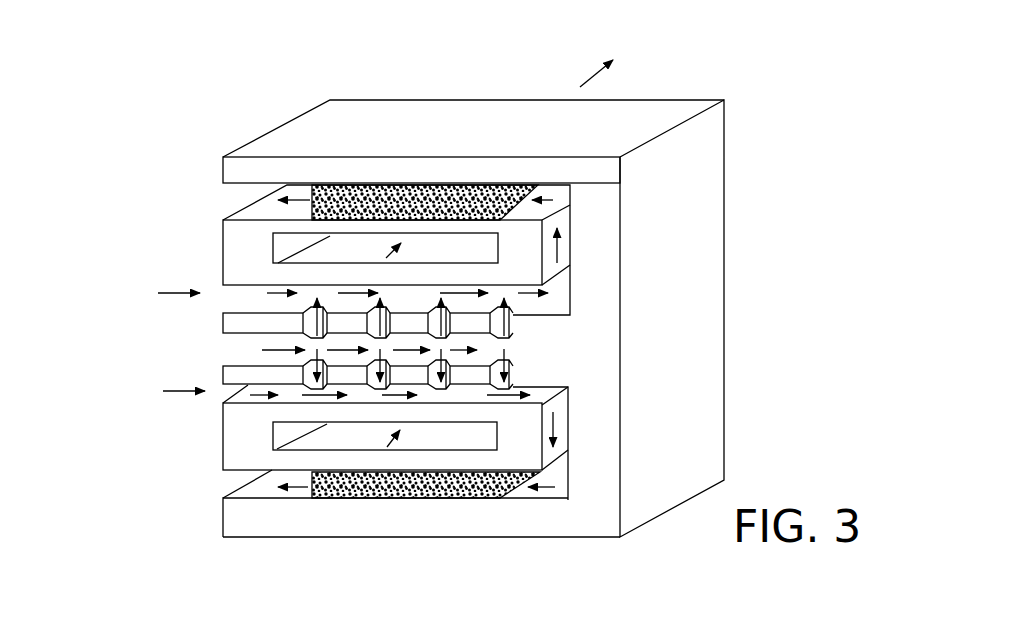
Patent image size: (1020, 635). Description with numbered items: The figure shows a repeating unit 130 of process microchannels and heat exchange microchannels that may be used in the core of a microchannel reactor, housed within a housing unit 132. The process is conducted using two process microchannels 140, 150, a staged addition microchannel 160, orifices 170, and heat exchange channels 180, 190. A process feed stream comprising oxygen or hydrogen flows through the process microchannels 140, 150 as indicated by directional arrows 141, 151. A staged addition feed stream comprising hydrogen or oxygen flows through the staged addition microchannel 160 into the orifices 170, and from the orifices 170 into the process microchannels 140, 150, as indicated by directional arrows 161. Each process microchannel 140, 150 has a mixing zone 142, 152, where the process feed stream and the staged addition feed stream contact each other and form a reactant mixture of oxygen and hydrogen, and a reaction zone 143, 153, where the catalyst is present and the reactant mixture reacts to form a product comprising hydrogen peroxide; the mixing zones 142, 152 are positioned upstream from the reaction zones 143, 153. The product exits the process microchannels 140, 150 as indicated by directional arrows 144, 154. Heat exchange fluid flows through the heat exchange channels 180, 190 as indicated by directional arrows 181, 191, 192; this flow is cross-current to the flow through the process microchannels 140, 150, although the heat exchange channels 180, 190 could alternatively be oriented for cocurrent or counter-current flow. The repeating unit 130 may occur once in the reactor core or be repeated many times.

The repeating unit 130 is at (305, 97).
The housing unit 132 is at (705, 172).
The process microchannel 140 is at (288, 400).
The directional arrow 141 is at (180, 391).
The mixing zone 142 is at (473, 397).
The reaction zone 143 is at (376, 497).
The directional arrow 144 is at (225, 488).
The process microchannel 150 is at (270, 285).
The directional arrow 151 is at (183, 290).
The mixing zone 152 is at (493, 302).
The reaction zone 153 is at (368, 192).
The directional arrow 154 is at (212, 198).
The staged addition microchannel 160 is at (268, 334).
The directional arrow 161 is at (205, 348).
The orifice 170 is at (500, 325).
The heat exchange channel 180 is at (362, 440).
The directional arrow 181 is at (390, 450).
The heat exchange channel 190 is at (327, 248).
The directional arrow 191 is at (388, 256).
The directional arrow 192 is at (590, 78).